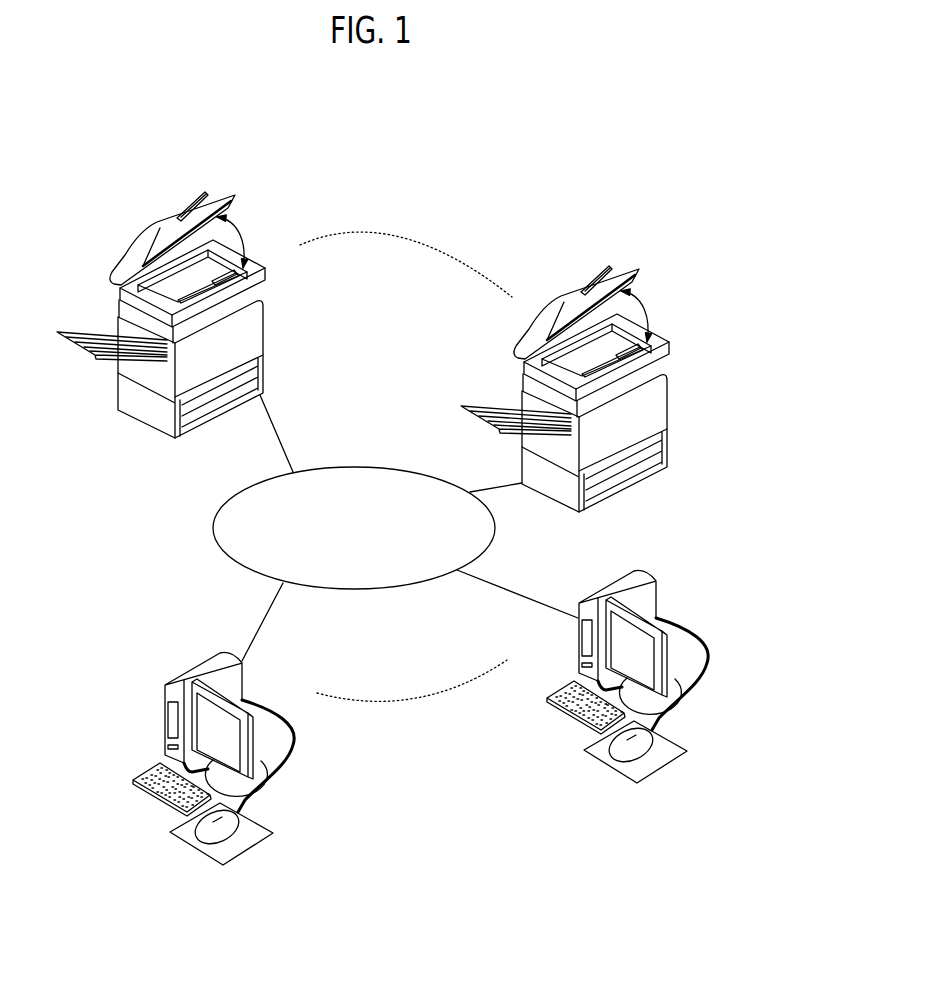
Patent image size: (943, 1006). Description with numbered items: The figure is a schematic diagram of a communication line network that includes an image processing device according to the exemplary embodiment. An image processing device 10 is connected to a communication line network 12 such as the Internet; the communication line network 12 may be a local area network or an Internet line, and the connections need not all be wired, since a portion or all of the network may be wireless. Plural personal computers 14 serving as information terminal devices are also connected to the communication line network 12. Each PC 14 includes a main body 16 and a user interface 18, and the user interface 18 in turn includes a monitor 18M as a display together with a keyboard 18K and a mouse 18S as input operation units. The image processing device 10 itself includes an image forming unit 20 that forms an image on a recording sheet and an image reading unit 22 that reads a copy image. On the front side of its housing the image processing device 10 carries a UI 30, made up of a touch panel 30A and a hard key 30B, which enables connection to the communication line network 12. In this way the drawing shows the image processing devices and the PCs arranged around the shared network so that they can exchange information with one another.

The image processing device 10 is at (253, 224).
The communication line network 12 is at (343, 466).
The personal computer 14 is at (260, 677).
The main body 16 is at (185, 680).
The user interface 18 is at (367, 807).
The keyboard 18K is at (155, 800).
The monitor 18M is at (187, 816).
The mouse 18S is at (190, 843).
The image forming unit 20 is at (247, 343).
The image reading unit 22 is at (265, 270).
The UI 30 is at (471, 344).
The touch panel 30A is at (204, 294).
The hard key 30B is at (234, 274).